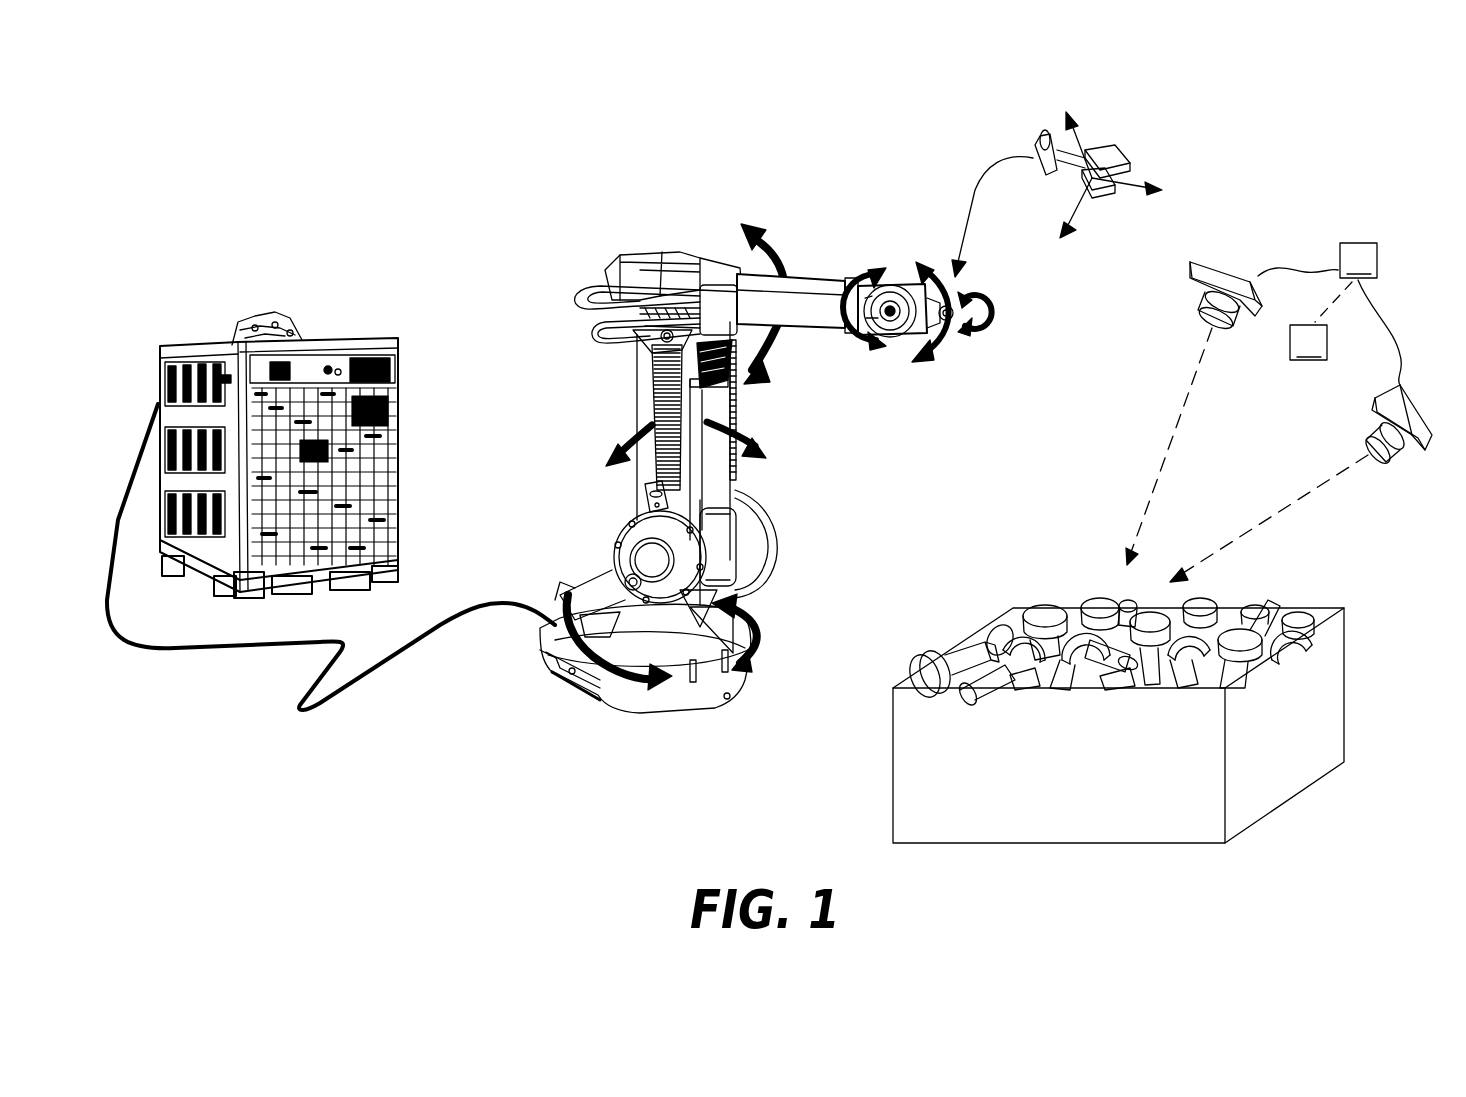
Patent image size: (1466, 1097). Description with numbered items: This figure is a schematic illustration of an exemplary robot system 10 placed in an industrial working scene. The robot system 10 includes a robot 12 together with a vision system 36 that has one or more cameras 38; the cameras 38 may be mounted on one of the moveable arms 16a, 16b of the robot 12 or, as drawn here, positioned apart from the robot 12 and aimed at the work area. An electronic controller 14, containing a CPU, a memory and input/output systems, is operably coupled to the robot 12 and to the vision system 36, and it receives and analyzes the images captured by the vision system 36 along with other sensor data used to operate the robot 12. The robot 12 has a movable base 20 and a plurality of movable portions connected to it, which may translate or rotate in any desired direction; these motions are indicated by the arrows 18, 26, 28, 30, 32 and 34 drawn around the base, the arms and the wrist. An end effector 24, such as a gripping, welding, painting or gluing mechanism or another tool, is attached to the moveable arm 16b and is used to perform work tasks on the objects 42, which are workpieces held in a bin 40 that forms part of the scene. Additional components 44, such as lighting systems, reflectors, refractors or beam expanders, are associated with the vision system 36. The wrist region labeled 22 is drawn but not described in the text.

The robot system 10 is at (570, 180).
The robot 12 is at (555, 268).
The electronic controller 14 is at (198, 290).
The moveable arm 16a is at (800, 305).
The moveable arm 16b is at (720, 460).
The movable portion (arrow) 18 is at (775, 593).
The movable base 20 is at (680, 703).
The end effector / wrist 22 is at (890, 290).
The end effector 24 is at (1057, 175).
The movable portion (arrow) 26 is at (592, 465).
The movable portion (arrow) 28 is at (768, 215).
The movable portion (arrow) 30 is at (852, 265).
The movable portion (arrow) 32 is at (945, 345).
The movable portion (arrow) 34 is at (1000, 305).
The vision system 36 is at (1329, 313).
The camera 38 is at (1238, 250).
The bin 40 is at (910, 778).
The objects 42 is at (1300, 600).
The additional components 44 is at (1321, 321).